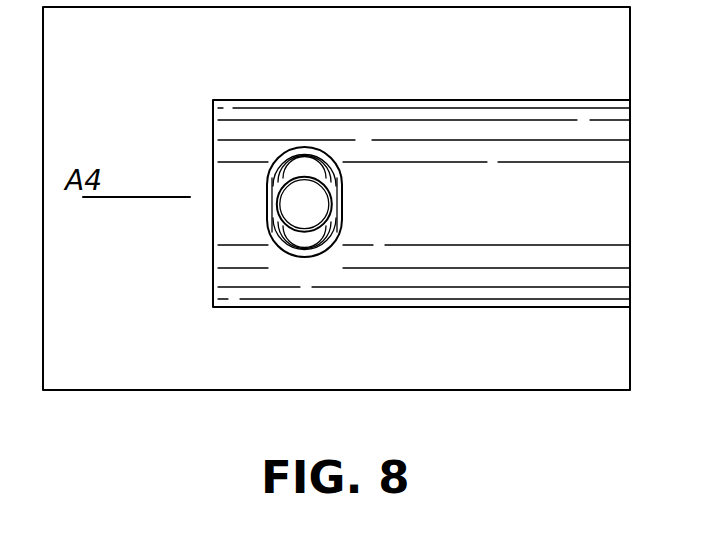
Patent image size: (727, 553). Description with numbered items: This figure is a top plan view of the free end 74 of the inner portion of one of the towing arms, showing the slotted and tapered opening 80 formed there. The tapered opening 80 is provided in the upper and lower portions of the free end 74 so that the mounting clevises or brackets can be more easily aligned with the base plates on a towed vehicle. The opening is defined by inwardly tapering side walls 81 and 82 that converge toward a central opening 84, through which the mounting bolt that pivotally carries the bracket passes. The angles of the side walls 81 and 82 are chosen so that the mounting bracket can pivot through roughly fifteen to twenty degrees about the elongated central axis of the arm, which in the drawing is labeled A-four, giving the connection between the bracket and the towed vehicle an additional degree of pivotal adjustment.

The free end 74 is at (497, 100).
The tapered opening 80 is at (348, 205).
The inwardly tapering side wall 81 is at (313, 252).
The inwardly tapering side wall 82 is at (313, 147).
The central opening 84 is at (300, 206).